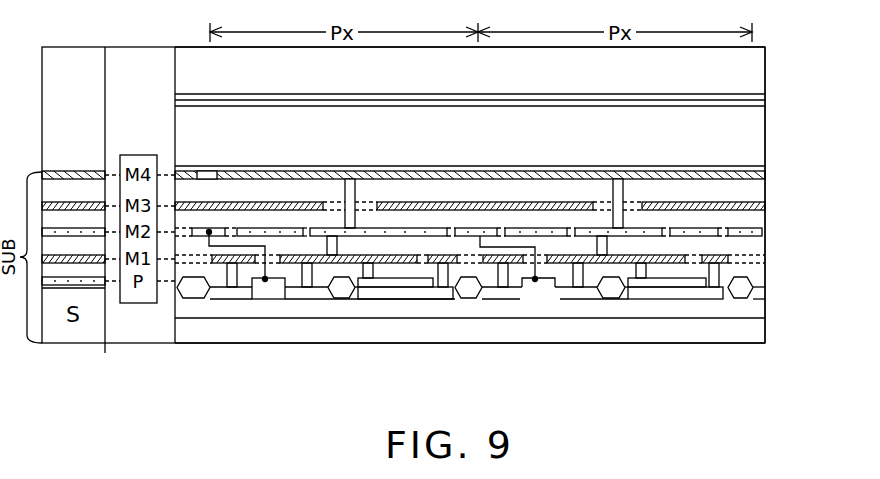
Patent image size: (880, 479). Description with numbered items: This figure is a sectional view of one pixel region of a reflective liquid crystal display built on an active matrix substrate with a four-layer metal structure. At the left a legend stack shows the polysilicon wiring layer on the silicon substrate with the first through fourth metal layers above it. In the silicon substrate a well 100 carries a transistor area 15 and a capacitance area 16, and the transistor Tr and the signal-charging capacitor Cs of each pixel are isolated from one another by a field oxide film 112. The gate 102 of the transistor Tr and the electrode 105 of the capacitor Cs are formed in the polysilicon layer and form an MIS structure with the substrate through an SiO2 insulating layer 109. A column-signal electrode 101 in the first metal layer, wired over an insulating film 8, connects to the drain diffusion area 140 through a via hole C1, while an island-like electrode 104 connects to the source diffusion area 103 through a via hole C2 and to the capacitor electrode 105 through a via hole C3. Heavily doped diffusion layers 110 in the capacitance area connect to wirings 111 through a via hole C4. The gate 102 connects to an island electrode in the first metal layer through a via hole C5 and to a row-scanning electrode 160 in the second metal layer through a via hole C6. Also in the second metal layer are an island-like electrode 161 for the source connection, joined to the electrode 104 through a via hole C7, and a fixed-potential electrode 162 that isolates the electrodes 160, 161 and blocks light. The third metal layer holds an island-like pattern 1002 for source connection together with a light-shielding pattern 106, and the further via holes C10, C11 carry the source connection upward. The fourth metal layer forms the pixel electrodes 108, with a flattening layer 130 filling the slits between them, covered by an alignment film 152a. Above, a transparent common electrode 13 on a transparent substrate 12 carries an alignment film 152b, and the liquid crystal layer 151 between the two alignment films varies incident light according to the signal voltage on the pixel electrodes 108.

The insulating film 8 is at (765, 271).
The transparent substrate 12 is at (499, 81).
The transparent common electrode 13 is at (740, 94).
The transistor area 15 is at (553, 312).
The capacitance area 16 is at (690, 321).
The well 100 is at (317, 305).
The column-signal electrode 101 is at (483, 255).
The gate 102 is at (572, 314).
The source diffusion area 103 is at (585, 298).
The island-like electrode 104 is at (555, 255).
The electrode of the capacitor 105 is at (638, 278).
The light-shielding pattern 106 is at (520, 230).
The pixel electrode 108 is at (735, 180).
The SiO2 insulating layer 109 is at (704, 289).
The heavily doped diffusion layer 110 is at (722, 299).
The wiring 111 is at (725, 263).
The field oxide film 112 is at (741, 293).
The flattening layer 130 is at (233, 140).
The drain diffusion area 140 is at (495, 297).
The liquid crystal layer 151 is at (319, 140).
The alignment film 152a is at (757, 100).
The alignment film 152b is at (755, 166).
The row-scanning electrode 160 is at (220, 228).
The island-like electrode 161 is at (592, 229).
The fixed-potential electrode 162 is at (712, 232).
The island-like pattern 1002 is at (610, 202).
The via hole C1 is at (233, 281).
The via hole C2 is at (305, 281).
The via hole C3 is at (368, 278).
The via hole C4 is at (443, 278).
The via hole C5 is at (209, 234).
The via hole C6 is at (105, 361).
The via hole C7 is at (350, 220).
The contact hole C10 is at (627, 233).
The contact hole C11 is at (627, 205).
The transistor Tr is at (542, 348).
The signal-charging capacitor Cs is at (707, 350).